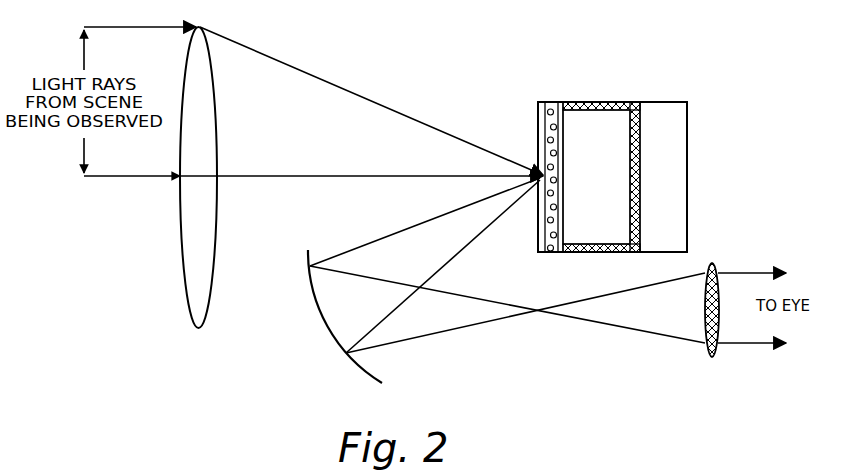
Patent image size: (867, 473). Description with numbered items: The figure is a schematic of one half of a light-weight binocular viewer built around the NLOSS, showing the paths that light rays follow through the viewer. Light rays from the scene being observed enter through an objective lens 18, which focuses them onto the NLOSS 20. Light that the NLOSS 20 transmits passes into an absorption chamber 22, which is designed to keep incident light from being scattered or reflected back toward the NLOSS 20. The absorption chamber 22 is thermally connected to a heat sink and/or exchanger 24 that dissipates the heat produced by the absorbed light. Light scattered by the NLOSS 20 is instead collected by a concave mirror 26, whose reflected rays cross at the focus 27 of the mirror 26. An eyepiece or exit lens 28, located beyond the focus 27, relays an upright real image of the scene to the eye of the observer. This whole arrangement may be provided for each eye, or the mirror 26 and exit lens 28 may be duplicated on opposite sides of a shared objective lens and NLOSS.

The objective lens 18 is at (184, 287).
The NLOSS 20 is at (552, 97).
The absorption chamber 22 is at (595, 117).
The heat sink and/or exchanger 24 is at (663, 100).
The concave mirror 26 is at (327, 333).
The focus of the mirror 27 is at (539, 313).
The eyepiece or exit lens 28 is at (712, 360).